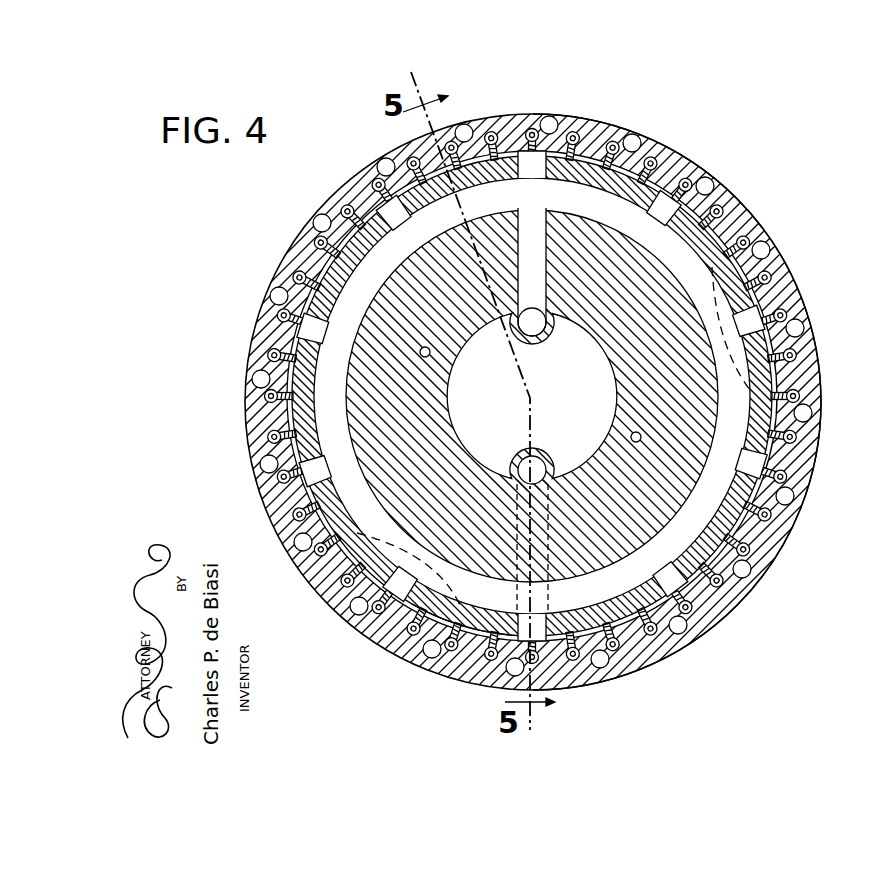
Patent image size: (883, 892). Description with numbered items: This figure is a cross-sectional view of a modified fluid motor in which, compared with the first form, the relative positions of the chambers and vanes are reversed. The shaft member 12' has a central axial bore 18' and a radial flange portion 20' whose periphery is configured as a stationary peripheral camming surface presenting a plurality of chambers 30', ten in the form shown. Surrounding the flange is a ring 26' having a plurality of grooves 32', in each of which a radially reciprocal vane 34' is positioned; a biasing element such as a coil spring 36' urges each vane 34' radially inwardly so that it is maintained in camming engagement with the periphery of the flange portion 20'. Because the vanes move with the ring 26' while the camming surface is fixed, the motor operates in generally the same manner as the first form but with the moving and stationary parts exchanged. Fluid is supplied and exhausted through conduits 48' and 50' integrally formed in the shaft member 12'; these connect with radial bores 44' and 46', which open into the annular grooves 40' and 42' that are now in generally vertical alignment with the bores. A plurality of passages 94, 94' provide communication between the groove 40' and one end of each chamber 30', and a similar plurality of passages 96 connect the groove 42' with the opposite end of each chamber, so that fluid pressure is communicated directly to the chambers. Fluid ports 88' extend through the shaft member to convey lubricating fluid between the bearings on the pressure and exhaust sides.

The shaft member 12' is at (441, 400).
The axial bore 18' is at (532, 396).
The flange portion 20' is at (572, 396).
The ring 26' is at (704, 298).
The chambers 30' is at (567, 403).
The grooves 32' is at (522, 655).
The vanes 34' is at (677, 546).
The coil spring 36' is at (367, 627).
The first annular groove 40' is at (441, 397).
The second annular groove 42' is at (554, 562).
The radial bore 44' is at (552, 185).
The radial bore 46' is at (441, 397).
The fluid conduit 48' is at (551, 298).
The fluid conduit 50' is at (555, 450).
The fluid ports 88' is at (520, 413).
The passages 94 is at (358, 398).
The passages 94' is at (706, 393).
The passages 96 is at (553, 438).